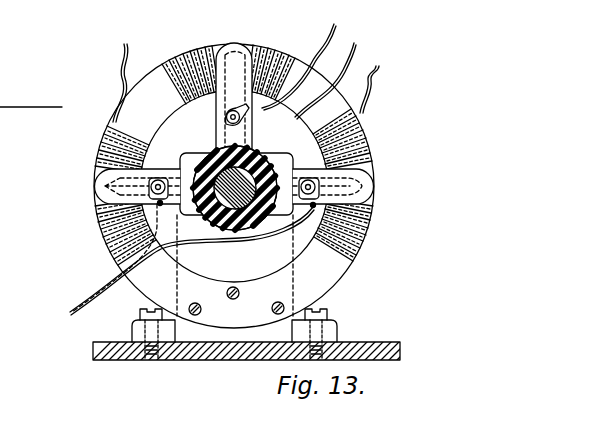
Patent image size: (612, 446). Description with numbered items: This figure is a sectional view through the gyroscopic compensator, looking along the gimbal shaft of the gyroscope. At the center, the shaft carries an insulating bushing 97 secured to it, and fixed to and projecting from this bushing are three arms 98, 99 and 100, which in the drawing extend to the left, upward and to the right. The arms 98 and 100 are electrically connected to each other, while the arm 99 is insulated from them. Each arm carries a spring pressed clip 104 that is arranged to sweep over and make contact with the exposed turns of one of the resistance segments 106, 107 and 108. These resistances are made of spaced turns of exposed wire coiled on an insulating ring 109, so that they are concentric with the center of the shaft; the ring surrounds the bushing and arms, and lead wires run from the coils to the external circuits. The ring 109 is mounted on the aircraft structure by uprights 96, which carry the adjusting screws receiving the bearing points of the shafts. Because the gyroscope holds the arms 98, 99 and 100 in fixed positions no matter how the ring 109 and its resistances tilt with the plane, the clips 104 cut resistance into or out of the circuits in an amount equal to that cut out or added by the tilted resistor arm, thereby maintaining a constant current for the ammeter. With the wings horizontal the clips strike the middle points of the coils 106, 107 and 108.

The uprights 96 is at (337, 323).
The insulating bushing 97 is at (209, 229).
The arm 98 is at (314, 171).
The arm 99 is at (219, 134).
The arm 100 is at (158, 170).
The spring pressed clip 104 is at (240, 43).
The resistance segment 106 is at (365, 219).
The resistance segment 107 is at (104, 141).
The resistance segment 108 is at (283, 62).
The insulating ring 109 is at (320, 283).